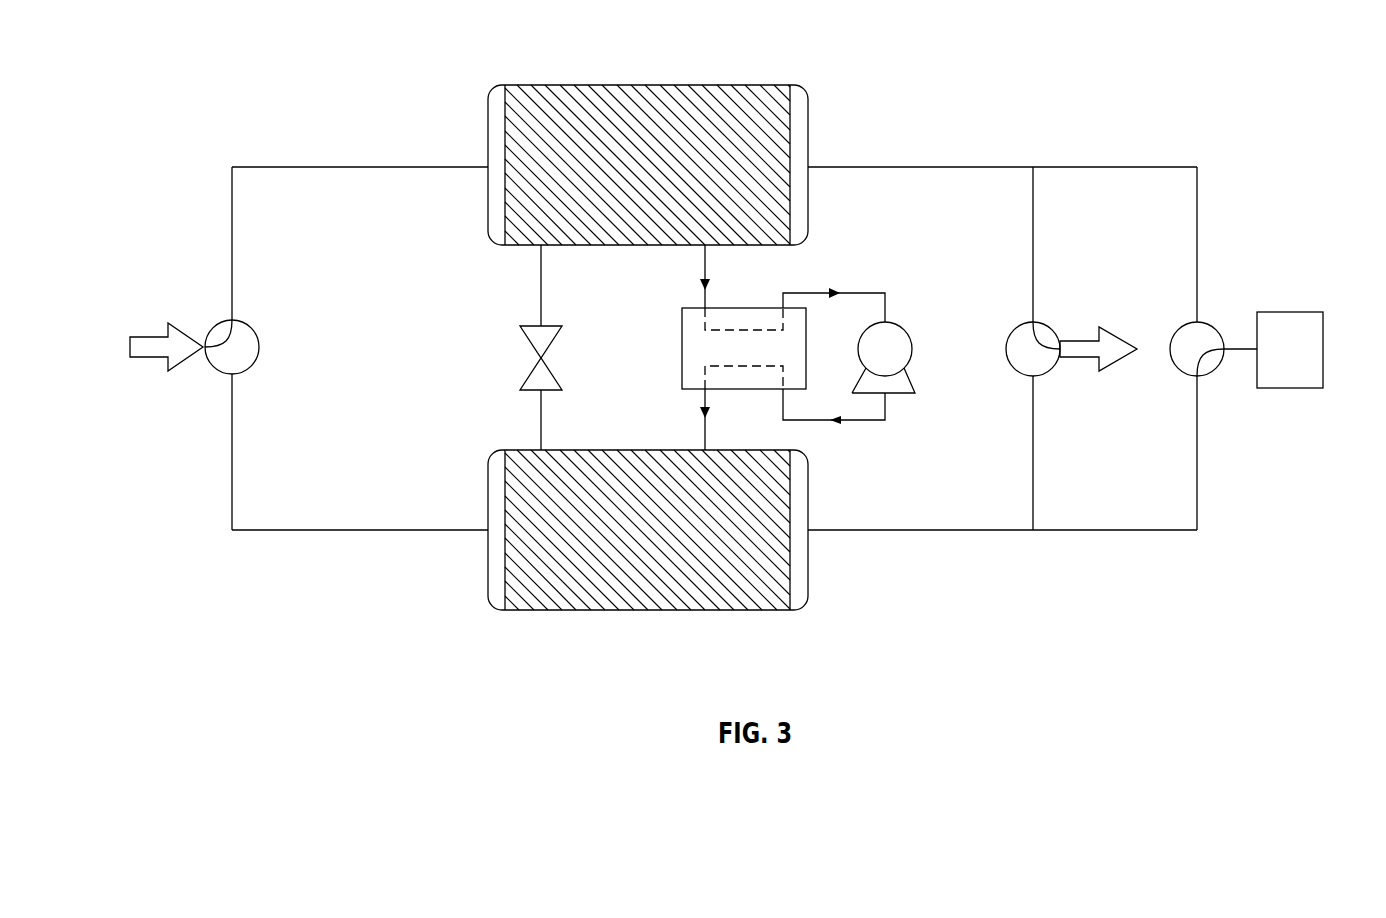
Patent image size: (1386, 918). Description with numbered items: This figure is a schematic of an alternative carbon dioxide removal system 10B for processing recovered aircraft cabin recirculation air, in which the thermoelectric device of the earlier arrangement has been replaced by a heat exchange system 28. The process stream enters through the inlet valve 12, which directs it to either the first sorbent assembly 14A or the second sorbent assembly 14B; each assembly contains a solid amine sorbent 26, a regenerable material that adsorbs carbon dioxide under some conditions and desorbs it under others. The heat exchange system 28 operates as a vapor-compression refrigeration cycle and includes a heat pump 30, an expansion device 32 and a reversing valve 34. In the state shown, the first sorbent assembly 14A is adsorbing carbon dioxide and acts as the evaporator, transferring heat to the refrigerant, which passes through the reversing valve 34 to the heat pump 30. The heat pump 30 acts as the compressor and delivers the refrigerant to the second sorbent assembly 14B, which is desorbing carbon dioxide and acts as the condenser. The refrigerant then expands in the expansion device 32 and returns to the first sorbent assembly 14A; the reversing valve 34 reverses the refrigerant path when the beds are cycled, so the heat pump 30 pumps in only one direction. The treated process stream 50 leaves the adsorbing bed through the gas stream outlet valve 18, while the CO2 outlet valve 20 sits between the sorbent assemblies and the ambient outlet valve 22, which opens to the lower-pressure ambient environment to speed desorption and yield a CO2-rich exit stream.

The CO2 removal system 10B is at (210, 298).
The inlet valve 12 is at (255, 328).
The first sorbent assembly 14A is at (564, 75).
The second sorbent assembly 14B is at (564, 621).
The solid amine sorbent 26 is at (646, 104).
The heat exchange system 28 is at (847, 128).
The expansion device 32 is at (528, 340).
The reversing valve 34 is at (682, 348).
The heat pump 30 is at (913, 349).
The gas stream outlet valve 18 is at (1016, 328).
The process stream 50 is at (1084, 338).
The CO2 outlet valve 20 is at (1180, 328).
The ambient outlet valve 22 is at (1290, 312).